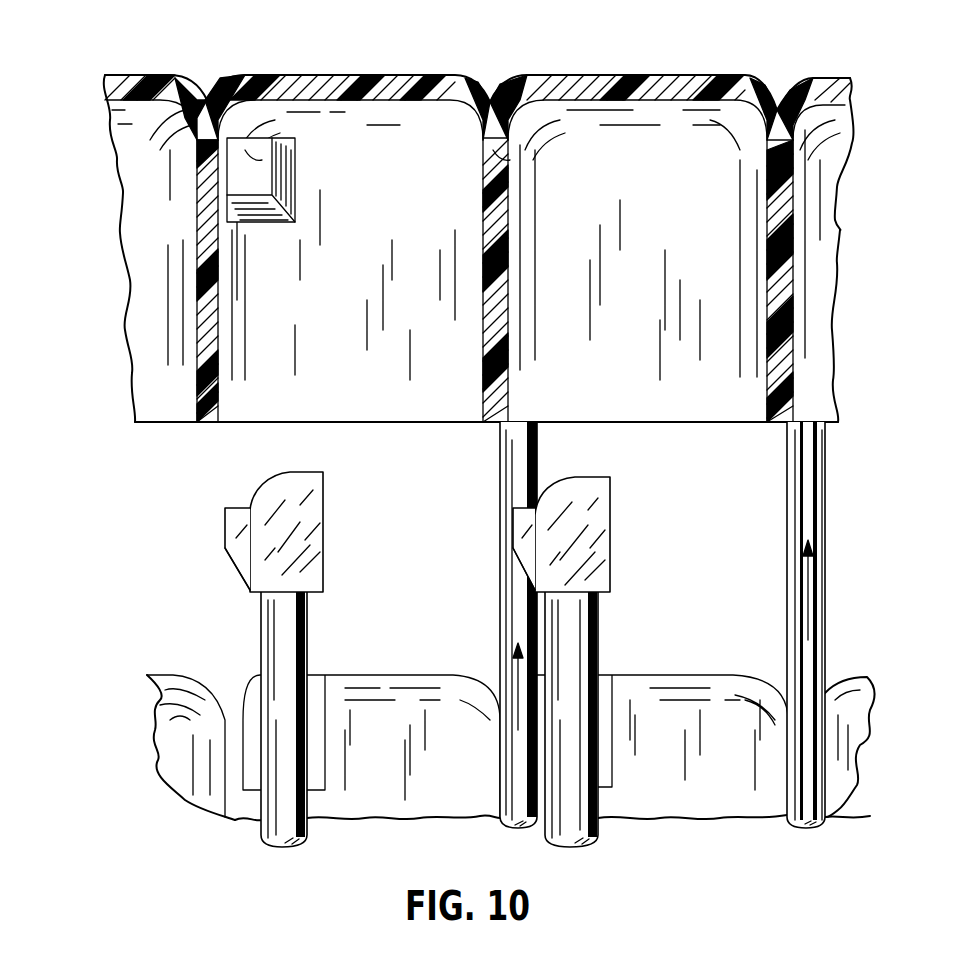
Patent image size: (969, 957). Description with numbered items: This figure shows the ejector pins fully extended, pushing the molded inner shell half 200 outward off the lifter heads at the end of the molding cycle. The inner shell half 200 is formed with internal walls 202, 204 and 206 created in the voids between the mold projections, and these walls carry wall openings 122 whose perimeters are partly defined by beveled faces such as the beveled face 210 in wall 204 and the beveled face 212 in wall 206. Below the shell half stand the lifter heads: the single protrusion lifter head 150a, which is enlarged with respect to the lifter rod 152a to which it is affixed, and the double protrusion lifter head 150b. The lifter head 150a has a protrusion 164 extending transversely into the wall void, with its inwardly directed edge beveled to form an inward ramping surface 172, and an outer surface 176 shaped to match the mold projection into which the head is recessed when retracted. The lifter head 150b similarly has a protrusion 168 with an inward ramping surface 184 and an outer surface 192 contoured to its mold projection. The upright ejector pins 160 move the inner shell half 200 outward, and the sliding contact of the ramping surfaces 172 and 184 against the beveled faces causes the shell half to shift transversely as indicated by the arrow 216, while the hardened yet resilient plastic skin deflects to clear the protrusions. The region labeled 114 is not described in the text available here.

The inner shell half 200 is at (441, 240).
The arrow 216 is at (437, 56).
The end portion 114 is at (212, 190).
The wall openings 122 is at (198, 153).
The internal wall 202 is at (218, 384).
The internal wall 204 is at (508, 390).
The internal wall 206 is at (350, 240).
The beveled face 210 is at (487, 220).
The beveled face 212 is at (258, 225).
The single protrusion lifter head 150a is at (568, 644).
The double protrusion lifter head 150b is at (300, 644).
The lifter rod 152a is at (597, 655).
The ejector pins 160 is at (500, 447).
The protrusion 164 is at (517, 528).
The protrusion 168 is at (225, 517).
The inward ramping surface 172 is at (522, 565).
The outer surface 176 is at (555, 497).
The inward ramping surface 184 is at (234, 566).
The outer surface 192 is at (300, 470).